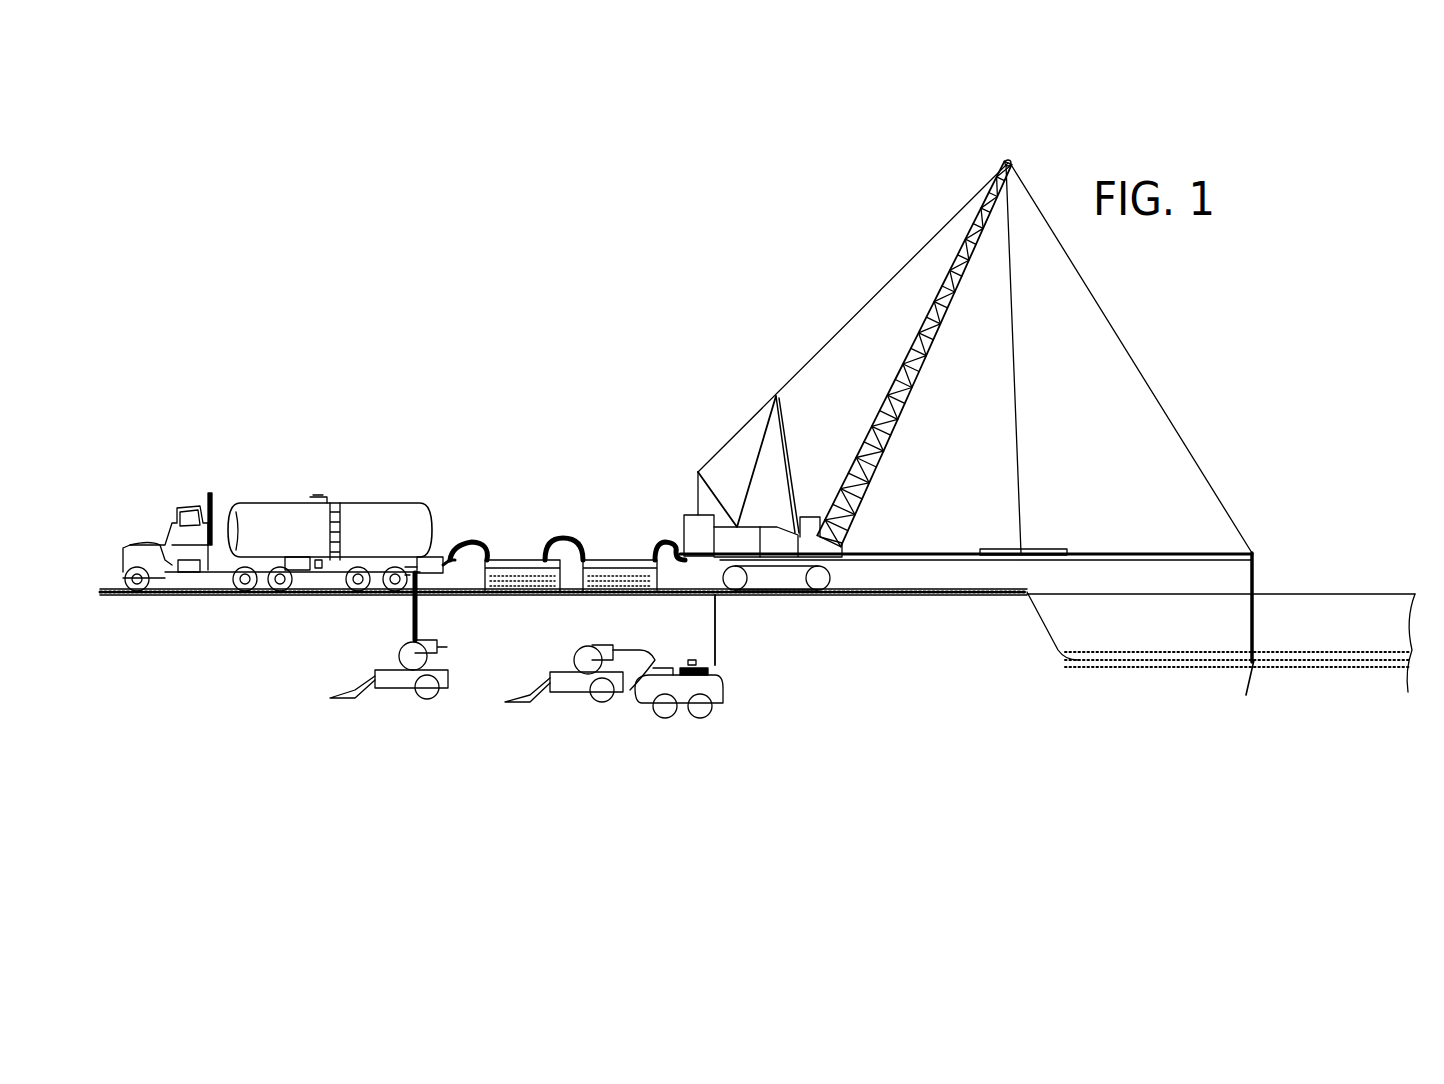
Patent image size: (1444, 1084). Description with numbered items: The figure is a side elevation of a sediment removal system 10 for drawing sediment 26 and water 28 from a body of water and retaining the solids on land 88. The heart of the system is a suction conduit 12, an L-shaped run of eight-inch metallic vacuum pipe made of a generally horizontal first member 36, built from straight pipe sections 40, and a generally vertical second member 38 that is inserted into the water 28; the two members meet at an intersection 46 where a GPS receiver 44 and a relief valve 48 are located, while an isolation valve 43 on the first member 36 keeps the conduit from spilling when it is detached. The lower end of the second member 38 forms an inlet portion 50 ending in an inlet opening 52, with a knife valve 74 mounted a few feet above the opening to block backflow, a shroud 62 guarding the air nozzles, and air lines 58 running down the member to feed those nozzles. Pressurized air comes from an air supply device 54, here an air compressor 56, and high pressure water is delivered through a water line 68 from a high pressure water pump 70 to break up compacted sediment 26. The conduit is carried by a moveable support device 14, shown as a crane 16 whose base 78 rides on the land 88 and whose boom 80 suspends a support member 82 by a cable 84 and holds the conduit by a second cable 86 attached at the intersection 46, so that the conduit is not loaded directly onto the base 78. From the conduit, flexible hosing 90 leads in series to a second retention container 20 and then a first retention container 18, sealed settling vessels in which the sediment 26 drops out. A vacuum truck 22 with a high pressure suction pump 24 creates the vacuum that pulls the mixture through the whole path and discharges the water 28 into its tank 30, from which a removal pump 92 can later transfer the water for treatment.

The sediment removal system 10 is at (512, 268).
The suction conduit 12 is at (945, 553).
The moveable support device 14 is at (788, 451).
The crane 16 is at (795, 482).
The first sediment retention container 18 is at (486, 594).
The second sediment retention container 20 is at (573, 594).
The vacuum truck 22 is at (280, 495).
The high pressure suction pump 24 is at (448, 552).
The sediment 26 is at (527, 594).
The water 28 is at (1360, 615).
The tank 30 is at (375, 522).
The first member 36 is at (1113, 562).
The second member 38 is at (1255, 578).
The straight pipe sections 40 is at (1158, 552).
The isolation valve 43 is at (688, 606).
The GPS receiver 44 is at (1255, 550).
The intersection 46 is at (1256, 552).
The relief valve 48 is at (1258, 556).
The inlet portion 50 is at (1250, 658).
The inlet opening 52 is at (1254, 672).
The air supply device 54 is at (730, 700).
The air compressor 56 is at (705, 673).
The air lines 58 is at (720, 615).
The shroud 62 is at (1250, 662).
The water line 68 is at (642, 660).
The high pressure water pump 70 is at (558, 692).
The knife valve 74 is at (1257, 654).
The base 78 is at (767, 530).
The boom 80 is at (922, 392).
The support member 82 is at (1048, 548).
The cable 84 is at (1020, 402).
The cable 86 is at (1152, 354).
The land 88 is at (1006, 634).
The flexible hosing 90 is at (487, 556).
The removal pump 92 is at (392, 685).